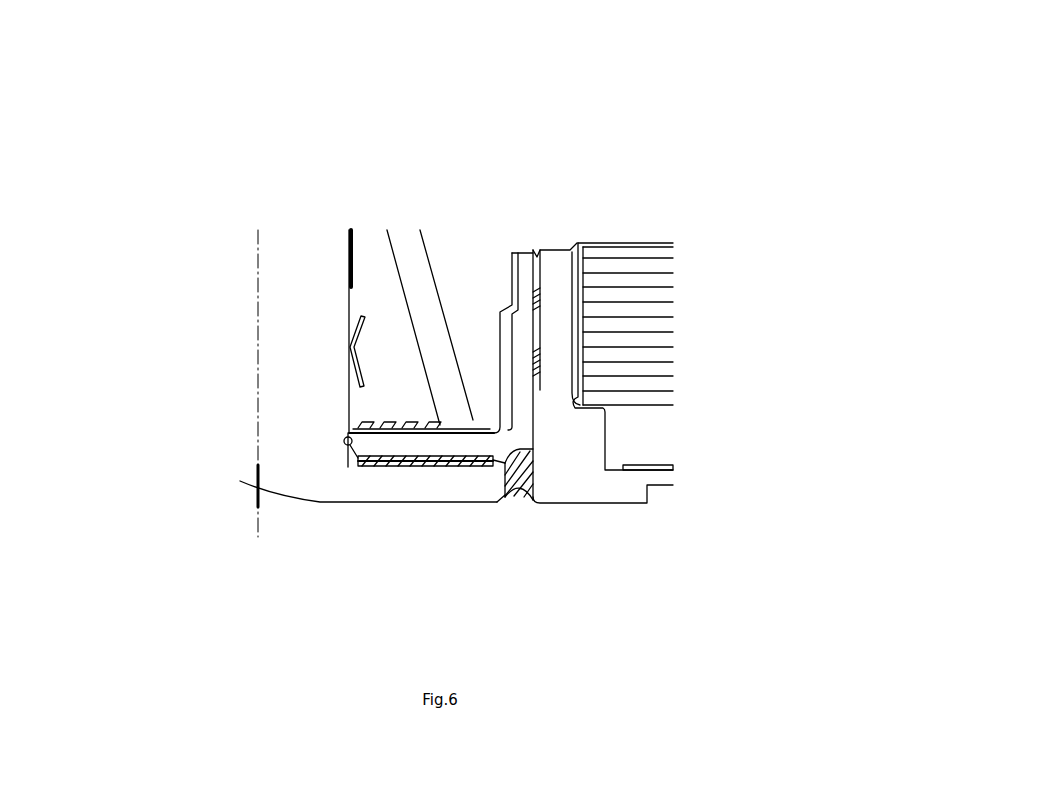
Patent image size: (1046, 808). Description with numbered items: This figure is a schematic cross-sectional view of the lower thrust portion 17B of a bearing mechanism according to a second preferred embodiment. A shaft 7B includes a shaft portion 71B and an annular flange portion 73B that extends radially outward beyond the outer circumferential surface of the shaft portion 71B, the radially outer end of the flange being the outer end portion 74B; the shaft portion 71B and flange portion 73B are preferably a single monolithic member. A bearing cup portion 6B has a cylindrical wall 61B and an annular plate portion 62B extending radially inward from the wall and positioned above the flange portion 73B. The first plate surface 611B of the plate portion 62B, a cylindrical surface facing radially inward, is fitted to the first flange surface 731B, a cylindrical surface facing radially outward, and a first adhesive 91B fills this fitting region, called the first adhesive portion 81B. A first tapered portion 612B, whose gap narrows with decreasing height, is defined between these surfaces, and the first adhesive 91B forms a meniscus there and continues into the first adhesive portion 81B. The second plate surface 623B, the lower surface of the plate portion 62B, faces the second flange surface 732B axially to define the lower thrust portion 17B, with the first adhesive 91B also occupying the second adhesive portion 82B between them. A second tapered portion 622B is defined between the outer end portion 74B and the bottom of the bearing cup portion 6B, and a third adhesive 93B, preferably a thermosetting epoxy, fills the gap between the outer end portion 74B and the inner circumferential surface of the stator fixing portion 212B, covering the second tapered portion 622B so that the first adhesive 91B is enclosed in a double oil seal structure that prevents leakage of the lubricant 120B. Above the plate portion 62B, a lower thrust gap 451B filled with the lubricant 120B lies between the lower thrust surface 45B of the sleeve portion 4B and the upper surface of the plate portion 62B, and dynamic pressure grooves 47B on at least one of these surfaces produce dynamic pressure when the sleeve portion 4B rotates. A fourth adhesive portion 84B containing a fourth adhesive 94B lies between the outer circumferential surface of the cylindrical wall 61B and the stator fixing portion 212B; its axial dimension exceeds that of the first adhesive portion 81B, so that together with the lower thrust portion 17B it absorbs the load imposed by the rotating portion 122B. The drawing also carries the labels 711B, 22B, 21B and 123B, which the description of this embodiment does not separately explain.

The rotating portion 122B is at (427, 135).
The shaft 7B is at (153, 230).
The bearing cup portion 6B is at (852, 258).
The upper wall portion 711B is at (347, 247).
The shaft portion 71B is at (332, 267).
The sleeve portion 4B is at (388, 328).
The second adhesive portion 82B is at (363, 372).
The dynamic pressure grooves 47B is at (440, 427).
The lower thrust gap 451B is at (418, 430).
The second plate surface 623B is at (467, 440).
The fourth adhesive portion 84B is at (538, 308).
The fourth adhesive 94B is at (573, 258).
The stator fixing portion 212B is at (563, 327).
The cylindrical wall 61B is at (583, 350).
The fin base 22B is at (653, 353).
The lubricant 120B is at (505, 385).
The substrate 21B is at (718, 498).
The first tapered portion 612B is at (350, 435).
The first adhesive 91B is at (347, 440).
The first flange surface 731B is at (344, 446).
The first adhesive portion 81B is at (256, 486).
The first plate surface 611B is at (390, 470).
The lower thrust surface 45B is at (400, 470).
The flange portion 73B is at (408, 466).
The plate portion 62B is at (443, 452).
The second flange surface 732B is at (432, 463).
The second tapered portion 622B is at (472, 470).
The outer end portion 74B is at (487, 505).
The third adhesive 93B is at (530, 478).
The lower thrust portion 17B is at (322, 600).
The bottom region 123B is at (203, 570).